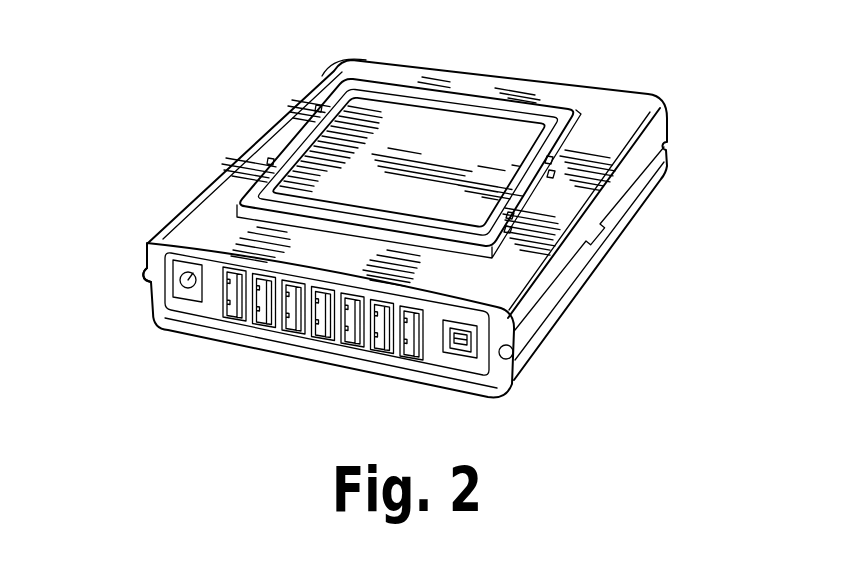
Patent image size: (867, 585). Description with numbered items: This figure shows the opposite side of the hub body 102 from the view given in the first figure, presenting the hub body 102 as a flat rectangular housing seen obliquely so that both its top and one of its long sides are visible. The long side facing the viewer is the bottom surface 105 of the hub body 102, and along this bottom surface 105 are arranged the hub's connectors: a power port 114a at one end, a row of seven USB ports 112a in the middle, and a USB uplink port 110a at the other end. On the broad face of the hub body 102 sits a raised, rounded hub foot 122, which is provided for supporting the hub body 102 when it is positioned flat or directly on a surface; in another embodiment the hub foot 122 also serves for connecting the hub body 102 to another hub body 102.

The hub body 102 is at (209, 181).
The hub foot 122 is at (570, 113).
The bottom surface 105 is at (150, 290).
The power port 114a is at (192, 302).
The USB ports 112a is at (408, 396).
The USB uplink port 110a is at (460, 356).